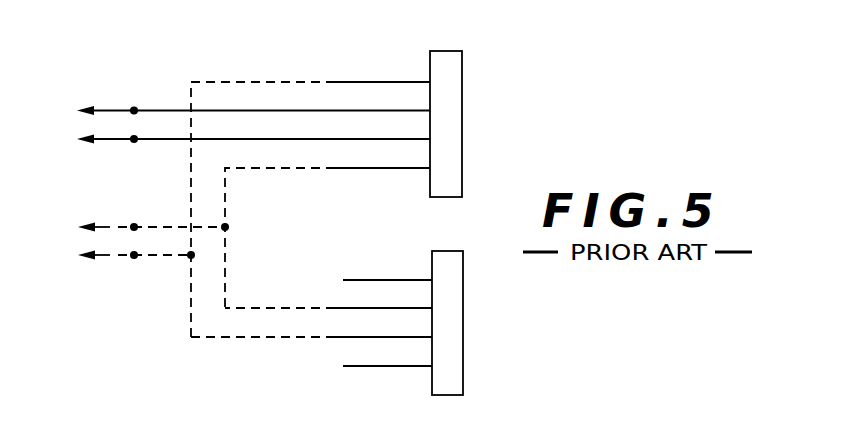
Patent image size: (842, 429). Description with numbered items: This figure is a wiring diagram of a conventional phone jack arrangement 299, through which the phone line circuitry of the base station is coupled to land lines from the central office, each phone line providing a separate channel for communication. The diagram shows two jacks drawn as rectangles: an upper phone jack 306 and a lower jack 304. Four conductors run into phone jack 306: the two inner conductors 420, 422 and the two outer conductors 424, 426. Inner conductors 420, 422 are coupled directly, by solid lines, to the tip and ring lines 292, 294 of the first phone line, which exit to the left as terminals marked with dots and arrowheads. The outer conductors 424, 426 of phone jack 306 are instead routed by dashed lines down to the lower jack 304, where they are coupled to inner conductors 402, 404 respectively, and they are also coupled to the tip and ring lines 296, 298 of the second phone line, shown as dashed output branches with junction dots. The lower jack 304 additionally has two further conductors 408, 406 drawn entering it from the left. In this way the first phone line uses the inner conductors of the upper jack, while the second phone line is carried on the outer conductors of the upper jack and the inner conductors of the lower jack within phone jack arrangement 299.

The phone jack arrangement 299 is at (481, 38).
The phone jack 306 is at (463, 93).
The second logic block 304 is at (463, 293).
The outer conductor 426 is at (421, 81).
The inner conductor 420 is at (421, 109).
The inner conductor 422 is at (421, 137).
The outer conductor 424 is at (421, 167).
The input line 408 is at (421, 279).
The inner conductor 402 is at (421, 306).
The inner conductor 404 is at (421, 335).
The input line 406 is at (421, 364).
The tip line 292 is at (110, 109).
The ring line 294 is at (110, 141).
The tip line 296 is at (110, 225).
The ring line 298 is at (110, 257).